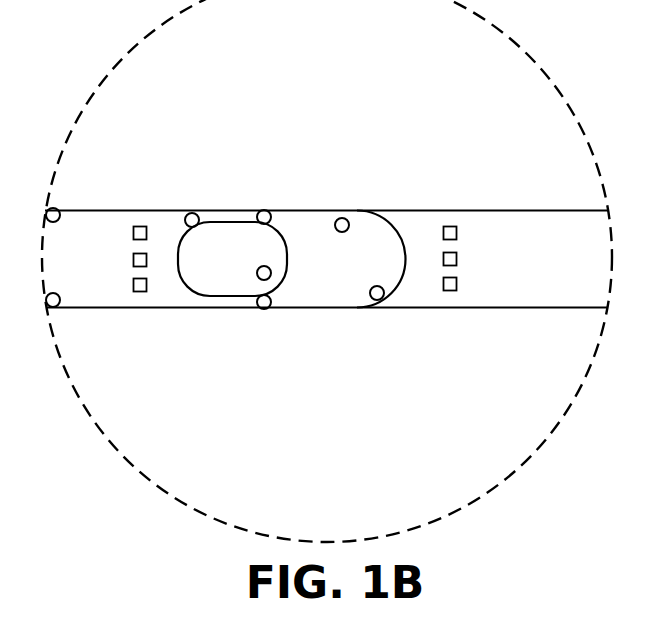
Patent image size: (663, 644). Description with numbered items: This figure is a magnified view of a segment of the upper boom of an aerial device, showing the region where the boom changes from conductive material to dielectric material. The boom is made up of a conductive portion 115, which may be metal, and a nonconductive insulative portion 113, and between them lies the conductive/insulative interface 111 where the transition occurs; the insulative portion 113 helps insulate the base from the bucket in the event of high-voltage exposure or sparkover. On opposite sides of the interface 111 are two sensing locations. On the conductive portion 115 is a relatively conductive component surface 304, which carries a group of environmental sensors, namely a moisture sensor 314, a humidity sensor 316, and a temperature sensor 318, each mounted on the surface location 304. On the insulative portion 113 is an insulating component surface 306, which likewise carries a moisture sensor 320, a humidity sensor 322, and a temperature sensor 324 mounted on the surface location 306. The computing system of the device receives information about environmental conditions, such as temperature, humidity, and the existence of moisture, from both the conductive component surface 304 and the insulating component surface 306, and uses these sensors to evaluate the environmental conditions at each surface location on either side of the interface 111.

The conductive/insulative interface 111 is at (346, 322).
The insulative portion 113 is at (536, 217).
The conductive portion 115 is at (80, 311).
The conductive component surface 304 is at (92, 225).
The insulating component surface 306 is at (422, 217).
The moisture sensor 314 is at (131, 236).
The humidity sensor 316 is at (131, 261).
The temperature sensor 318 is at (141, 292).
The moisture sensor 320 is at (457, 233).
The humidity sensor 322 is at (457, 259).
The temperature sensor 324 is at (457, 284).